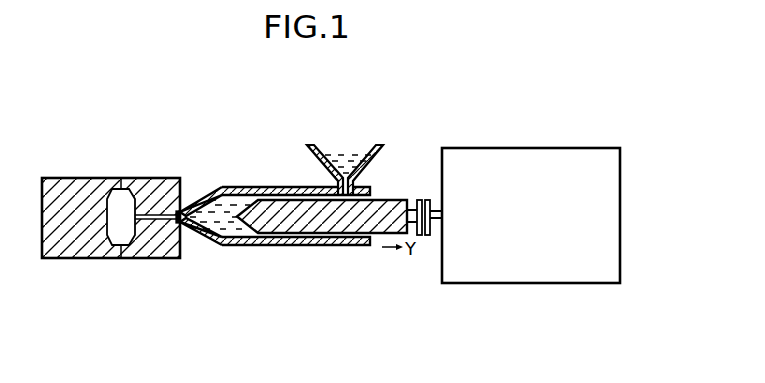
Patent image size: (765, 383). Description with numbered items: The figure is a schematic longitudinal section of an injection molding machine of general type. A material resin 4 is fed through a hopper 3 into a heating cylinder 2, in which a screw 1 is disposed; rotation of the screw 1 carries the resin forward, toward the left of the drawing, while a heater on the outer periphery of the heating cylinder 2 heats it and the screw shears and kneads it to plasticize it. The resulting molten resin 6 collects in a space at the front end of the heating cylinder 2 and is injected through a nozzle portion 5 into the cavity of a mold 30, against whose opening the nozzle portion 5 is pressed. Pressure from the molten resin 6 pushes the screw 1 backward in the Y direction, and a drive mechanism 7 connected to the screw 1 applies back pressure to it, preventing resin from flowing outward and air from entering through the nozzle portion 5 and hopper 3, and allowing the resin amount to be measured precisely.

The screw 1 is at (250, 187).
The heating cylinder 2 is at (196, 207).
The hopper 3 is at (310, 159).
The material resin 4 is at (349, 148).
The nozzle portion 5 is at (197, 233).
The molten resin 6 is at (222, 247).
The drive mechanism 7 is at (535, 148).
The mold 30 is at (55, 260).